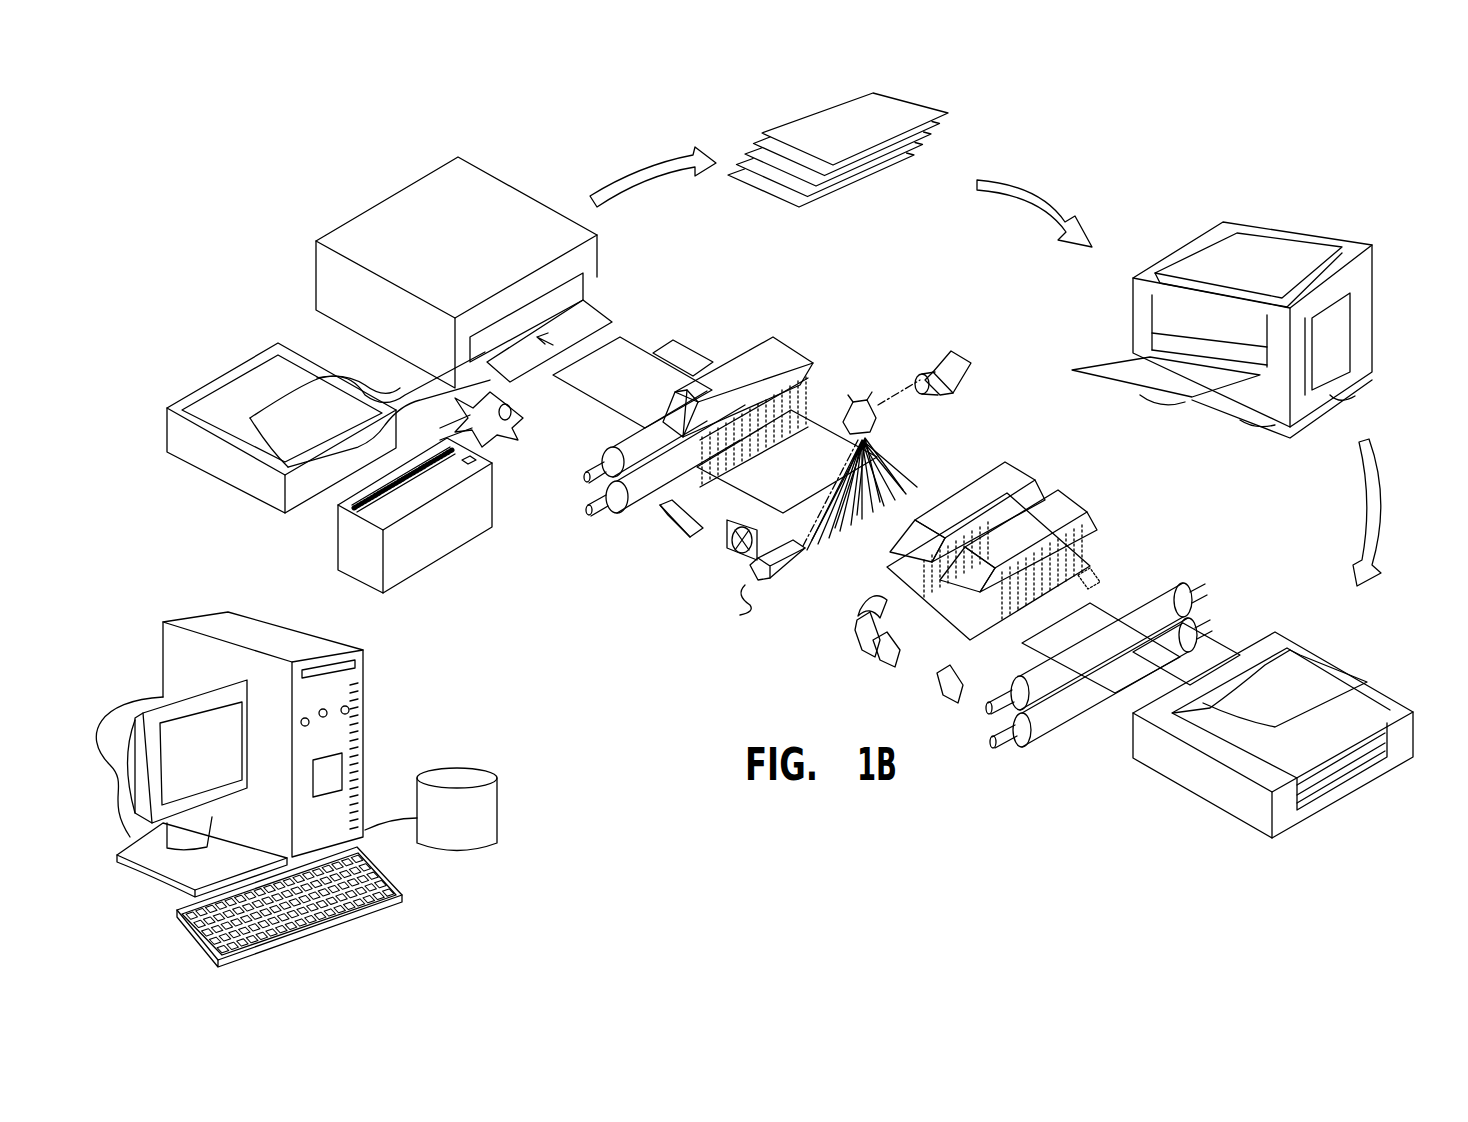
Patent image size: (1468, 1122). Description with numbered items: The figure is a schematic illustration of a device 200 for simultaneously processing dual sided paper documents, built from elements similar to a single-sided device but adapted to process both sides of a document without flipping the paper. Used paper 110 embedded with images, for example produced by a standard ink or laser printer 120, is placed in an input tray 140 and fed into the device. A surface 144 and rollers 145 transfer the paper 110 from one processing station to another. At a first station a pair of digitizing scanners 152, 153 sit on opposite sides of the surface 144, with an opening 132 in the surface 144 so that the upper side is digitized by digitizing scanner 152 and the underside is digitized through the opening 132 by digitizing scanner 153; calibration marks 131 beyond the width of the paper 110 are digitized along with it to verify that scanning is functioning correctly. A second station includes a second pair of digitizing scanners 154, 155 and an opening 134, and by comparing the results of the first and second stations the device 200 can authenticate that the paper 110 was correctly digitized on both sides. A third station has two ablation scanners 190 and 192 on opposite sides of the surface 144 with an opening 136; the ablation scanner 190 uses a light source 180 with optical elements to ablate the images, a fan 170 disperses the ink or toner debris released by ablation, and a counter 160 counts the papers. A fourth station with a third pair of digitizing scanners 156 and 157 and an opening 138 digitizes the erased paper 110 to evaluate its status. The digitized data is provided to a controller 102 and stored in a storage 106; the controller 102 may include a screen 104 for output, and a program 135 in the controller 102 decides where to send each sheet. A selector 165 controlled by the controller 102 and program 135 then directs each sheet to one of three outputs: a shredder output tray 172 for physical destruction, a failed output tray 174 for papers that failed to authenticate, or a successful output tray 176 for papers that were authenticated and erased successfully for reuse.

The device 200 is at (524, 146).
The successful output tray 176 is at (528, 205).
The paper 110 is at (843, 180).
The ink or laser printer 120 is at (1365, 280).
The failed output tray 174 is at (248, 490).
The shredder output tray 172 is at (360, 575).
The selector 165 is at (462, 400).
The rollers 145 is at (782, 312).
The digitizing scanner 156 is at (800, 356).
The opening 138 is at (823, 440).
The ablation scanner 190 is at (860, 405).
The opening 136 is at (938, 507).
The light source 180 is at (967, 365).
The digitizing scanner 157 is at (675, 537).
The fan 170 is at (740, 557).
The counter 160 is at (778, 580).
The opening 134 is at (852, 597).
The ablation scanner 192 is at (853, 623).
The calibration marks 131 is at (1085, 580).
The digitizing scanner 154 is at (1037, 475).
The digitizing scanner 152 is at (1080, 500).
The digitizing scanner 155 is at (890, 665).
The digitizing scanner 153 is at (955, 703).
The opening 132 is at (1108, 598).
The surface 144 is at (1203, 655).
The input tray 140 is at (1385, 702).
The controller 102 is at (208, 622).
The program 135 is at (337, 773).
The screen 104 is at (180, 670).
The storage 106 is at (493, 813).